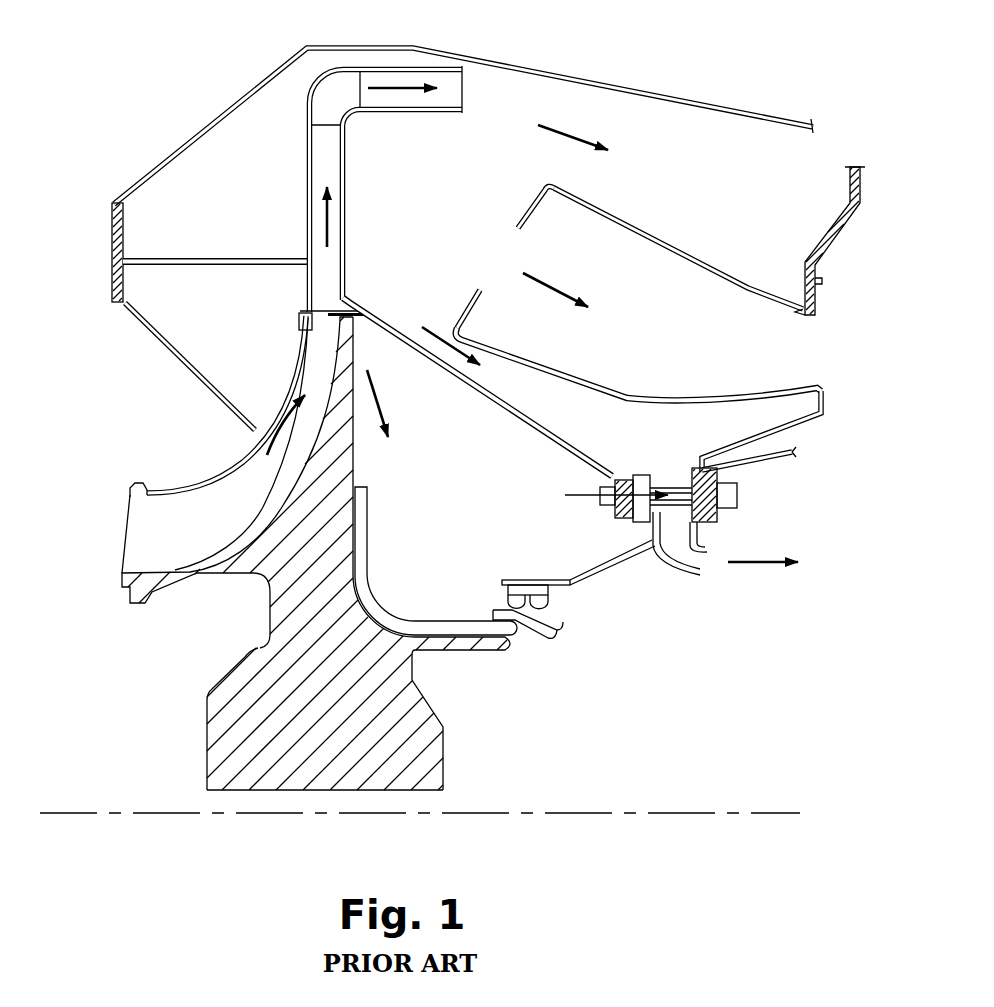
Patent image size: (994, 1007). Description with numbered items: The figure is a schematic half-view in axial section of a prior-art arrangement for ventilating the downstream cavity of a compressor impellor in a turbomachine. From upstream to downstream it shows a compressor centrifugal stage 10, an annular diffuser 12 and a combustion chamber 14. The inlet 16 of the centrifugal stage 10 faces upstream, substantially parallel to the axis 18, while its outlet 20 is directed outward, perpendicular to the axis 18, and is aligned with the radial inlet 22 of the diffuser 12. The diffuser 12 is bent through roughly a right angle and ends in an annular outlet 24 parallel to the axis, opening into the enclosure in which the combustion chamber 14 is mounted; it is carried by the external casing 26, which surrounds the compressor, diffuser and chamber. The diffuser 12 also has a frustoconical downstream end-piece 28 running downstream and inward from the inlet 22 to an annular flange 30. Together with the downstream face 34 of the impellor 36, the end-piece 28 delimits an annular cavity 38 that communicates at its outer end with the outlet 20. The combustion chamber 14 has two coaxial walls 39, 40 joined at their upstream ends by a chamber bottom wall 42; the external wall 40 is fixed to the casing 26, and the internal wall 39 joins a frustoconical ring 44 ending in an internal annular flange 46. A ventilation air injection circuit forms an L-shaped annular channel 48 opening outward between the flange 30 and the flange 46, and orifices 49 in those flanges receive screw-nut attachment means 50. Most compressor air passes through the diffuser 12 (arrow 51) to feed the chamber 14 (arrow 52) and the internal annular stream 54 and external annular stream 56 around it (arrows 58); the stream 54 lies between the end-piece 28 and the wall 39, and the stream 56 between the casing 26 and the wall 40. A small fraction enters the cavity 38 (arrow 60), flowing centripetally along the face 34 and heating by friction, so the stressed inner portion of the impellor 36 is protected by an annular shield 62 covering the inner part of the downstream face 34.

The compressor centrifugal stage 10 is at (220, 440).
The annular diffuser 12 is at (302, 228).
The combustion chamber 14 is at (732, 263).
The inlet 16 is at (120, 557).
The axis 18 is at (687, 813).
The outlet 20 is at (310, 328).
The radial inlet 22 is at (345, 278).
The annular outlet 24 is at (393, 110).
The external casing 26 is at (618, 88).
The downstream annular end-piece 28 is at (432, 367).
The annular flange 30 is at (622, 517).
The downstream face 34 is at (353, 453).
The impellor 36 is at (250, 648).
The annular cavity 38 is at (467, 490).
The radially internal wall 39 is at (627, 400).
The radially external wall 40 is at (657, 240).
The chamber bottom wall 42 is at (523, 213).
The frustoconical ring 44 is at (757, 435).
The internal annular flange 46 is at (717, 513).
The annular channel 48 is at (680, 550).
The orifices 49 is at (600, 507).
The attachment means 50 is at (613, 485).
The arrow 51 is at (330, 235).
The arrow 52 is at (540, 278).
The internal annular stream 54 is at (627, 422).
The external annular stream 56 is at (670, 170).
The arrows 58 is at (592, 143).
The arrow 60 is at (353, 320).
The annular shield 62 is at (363, 560).